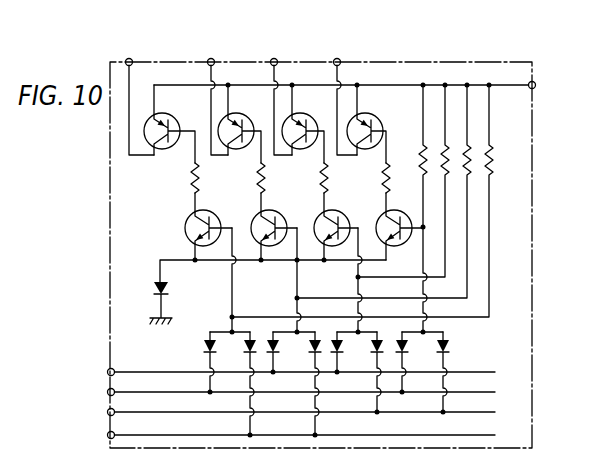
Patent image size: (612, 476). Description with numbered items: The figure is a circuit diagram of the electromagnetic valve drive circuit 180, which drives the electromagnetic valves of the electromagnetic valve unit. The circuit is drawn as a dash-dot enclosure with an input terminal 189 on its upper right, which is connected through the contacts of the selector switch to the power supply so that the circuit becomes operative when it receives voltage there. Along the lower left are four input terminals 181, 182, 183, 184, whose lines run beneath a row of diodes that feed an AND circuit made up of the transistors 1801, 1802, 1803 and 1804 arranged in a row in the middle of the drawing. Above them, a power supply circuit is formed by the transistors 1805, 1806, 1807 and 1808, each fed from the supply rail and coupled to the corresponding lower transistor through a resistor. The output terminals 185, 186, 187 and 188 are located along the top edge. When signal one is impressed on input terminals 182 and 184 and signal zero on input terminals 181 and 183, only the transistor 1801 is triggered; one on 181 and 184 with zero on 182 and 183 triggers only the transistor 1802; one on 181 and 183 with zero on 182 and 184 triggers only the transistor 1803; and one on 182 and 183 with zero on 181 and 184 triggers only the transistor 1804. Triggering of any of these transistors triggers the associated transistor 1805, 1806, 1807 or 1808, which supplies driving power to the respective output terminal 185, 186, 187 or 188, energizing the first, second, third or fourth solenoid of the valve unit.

The electromagnetic valve drive circuit 180 is at (427, 62).
The input terminal 181 is at (286, 372).
The input terminal 182 is at (285, 392).
The input terminal 183 is at (285, 412).
The input terminal 184 is at (285, 435).
The output terminal 185 is at (133, 95).
The output terminal 186 is at (210, 95).
The output terminal 187 is at (276, 95).
The output terminal 188 is at (338, 95).
The input terminal 189 is at (367, 89).
The transistor 1801 is at (185, 228).
The transistor 1802 is at (256, 214).
The transistor 1803 is at (319, 215).
The transistor 1804 is at (381, 215).
The transistor 1805 is at (173, 150).
The transistor 1806 is at (247, 147).
The transistor 1807 is at (311, 147).
The transistor 1808 is at (382, 125).